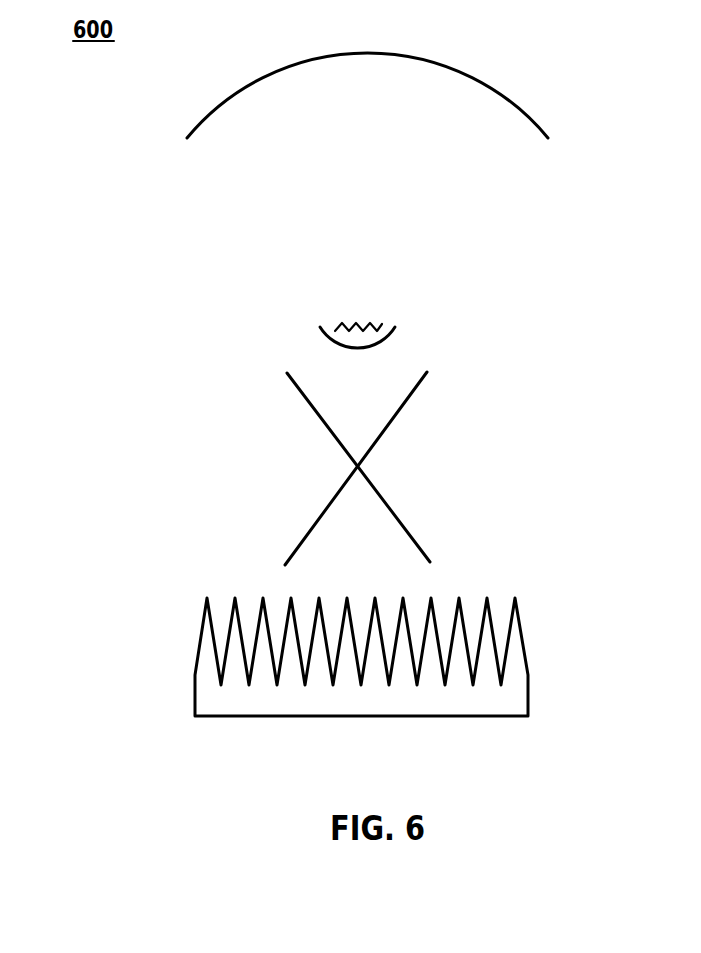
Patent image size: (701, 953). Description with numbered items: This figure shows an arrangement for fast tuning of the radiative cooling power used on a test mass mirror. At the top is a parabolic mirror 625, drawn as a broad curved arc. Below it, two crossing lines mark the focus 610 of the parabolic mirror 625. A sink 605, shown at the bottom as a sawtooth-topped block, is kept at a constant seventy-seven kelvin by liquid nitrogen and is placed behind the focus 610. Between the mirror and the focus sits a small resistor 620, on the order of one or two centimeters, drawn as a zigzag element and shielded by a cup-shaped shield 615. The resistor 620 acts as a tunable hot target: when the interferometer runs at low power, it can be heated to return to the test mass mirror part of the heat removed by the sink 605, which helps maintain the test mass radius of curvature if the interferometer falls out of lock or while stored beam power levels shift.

The sink 605 is at (527, 662).
The focus 610 is at (358, 467).
The shield 615 is at (372, 348).
The resistor 620 is at (363, 320).
The parabolic mirror 625 is at (458, 70).